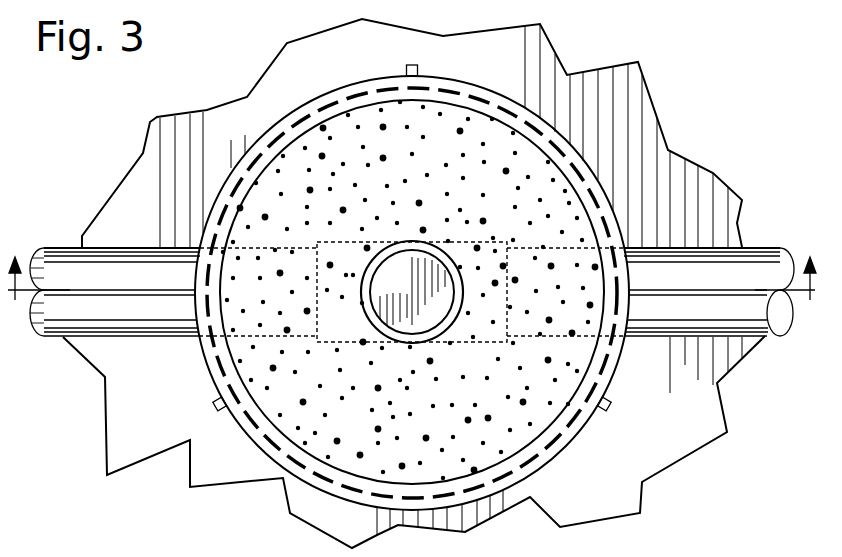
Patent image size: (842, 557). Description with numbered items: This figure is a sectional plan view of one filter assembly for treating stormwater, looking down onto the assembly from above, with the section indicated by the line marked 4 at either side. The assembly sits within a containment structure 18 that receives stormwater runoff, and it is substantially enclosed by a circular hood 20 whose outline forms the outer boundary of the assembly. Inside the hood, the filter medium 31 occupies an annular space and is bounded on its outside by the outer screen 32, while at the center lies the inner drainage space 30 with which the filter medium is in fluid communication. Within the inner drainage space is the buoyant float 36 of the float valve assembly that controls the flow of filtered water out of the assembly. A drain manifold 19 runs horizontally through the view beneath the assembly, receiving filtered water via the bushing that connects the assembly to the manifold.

The section line 4- 4 is at (410, 266).
The containment structure 18 is at (142, 429).
The drain manifold 19 is at (107, 339).
The hood 20 is at (534, 469).
The inner drainage space 30 is at (379, 322).
The filter medium 31 is at (595, 367).
The outer screen 32 is at (559, 440).
The buoyant float 36 is at (412, 288).